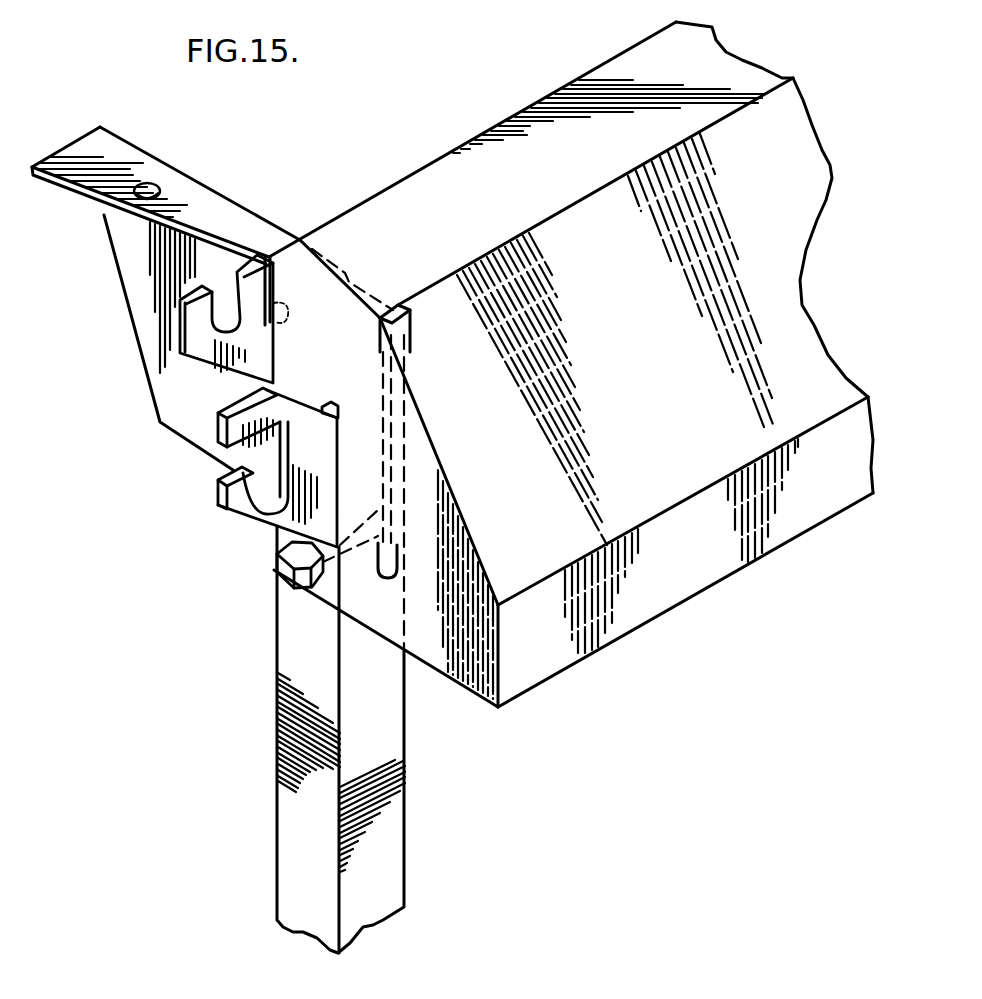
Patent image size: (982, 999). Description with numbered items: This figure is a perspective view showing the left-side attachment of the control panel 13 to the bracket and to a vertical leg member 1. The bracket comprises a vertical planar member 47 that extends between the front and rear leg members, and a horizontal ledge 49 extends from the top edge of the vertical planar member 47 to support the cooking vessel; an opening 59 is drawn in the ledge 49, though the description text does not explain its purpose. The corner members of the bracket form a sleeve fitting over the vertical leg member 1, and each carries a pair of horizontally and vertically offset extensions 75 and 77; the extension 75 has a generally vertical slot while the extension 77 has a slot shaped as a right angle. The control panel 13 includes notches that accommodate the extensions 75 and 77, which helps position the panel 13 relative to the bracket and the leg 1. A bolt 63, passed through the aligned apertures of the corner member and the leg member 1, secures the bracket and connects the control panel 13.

The vertical leg member 1 is at (290, 806).
The control panel 13 is at (683, 578).
The vertical planar member 47 is at (137, 270).
The horizontal ledge 49 is at (221, 341).
The hole 59 is at (160, 183).
The bolt 63 is at (290, 570).
The extension 75 is at (196, 352).
The extension 77 is at (236, 500).